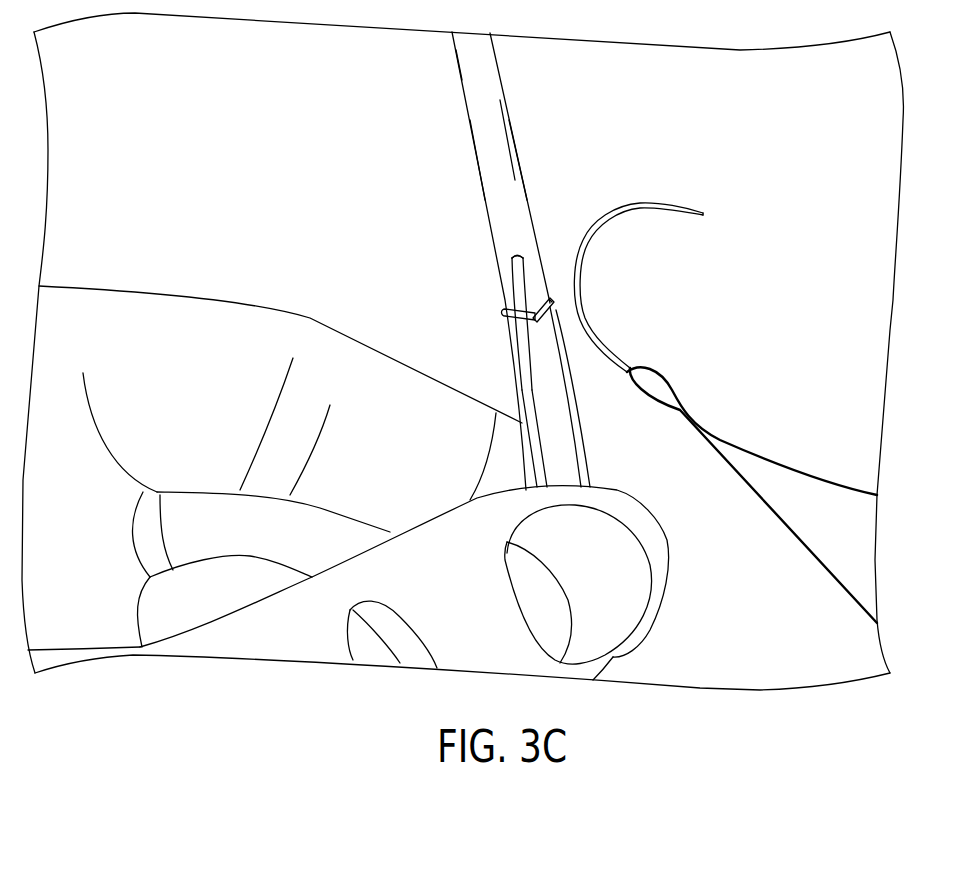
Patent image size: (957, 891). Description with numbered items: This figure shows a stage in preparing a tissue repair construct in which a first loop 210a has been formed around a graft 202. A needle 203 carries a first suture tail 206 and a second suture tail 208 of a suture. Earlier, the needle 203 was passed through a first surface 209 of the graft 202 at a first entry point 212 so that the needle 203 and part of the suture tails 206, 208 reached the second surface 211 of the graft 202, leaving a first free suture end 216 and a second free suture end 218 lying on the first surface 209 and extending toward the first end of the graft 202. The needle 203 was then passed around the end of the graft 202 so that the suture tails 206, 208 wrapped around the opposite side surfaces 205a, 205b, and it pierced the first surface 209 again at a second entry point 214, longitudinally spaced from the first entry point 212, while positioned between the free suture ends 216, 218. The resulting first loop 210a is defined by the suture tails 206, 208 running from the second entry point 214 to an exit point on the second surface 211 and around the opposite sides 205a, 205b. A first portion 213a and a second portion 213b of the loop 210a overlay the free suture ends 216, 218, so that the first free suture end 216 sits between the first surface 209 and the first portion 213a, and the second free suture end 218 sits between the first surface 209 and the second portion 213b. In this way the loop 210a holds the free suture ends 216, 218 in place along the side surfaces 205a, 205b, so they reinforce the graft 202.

The graft 202 is at (505, 89).
The needle 203 is at (640, 208).
The side surface 205a is at (525, 180).
The side surface 205b is at (485, 160).
The first suture tail 206 is at (813, 467).
The second suture tail 208 is at (820, 570).
The first surface 209 is at (502, 137).
The first loop 210a is at (500, 279).
The second surface 211 is at (448, 74).
The first entry point 212 is at (504, 242).
The first portion 213a is at (551, 299).
The second portion 213b is at (505, 313).
The second entry point 214 is at (540, 318).
The first free suture end 216 is at (580, 422).
The second free suture end 218 is at (537, 430).